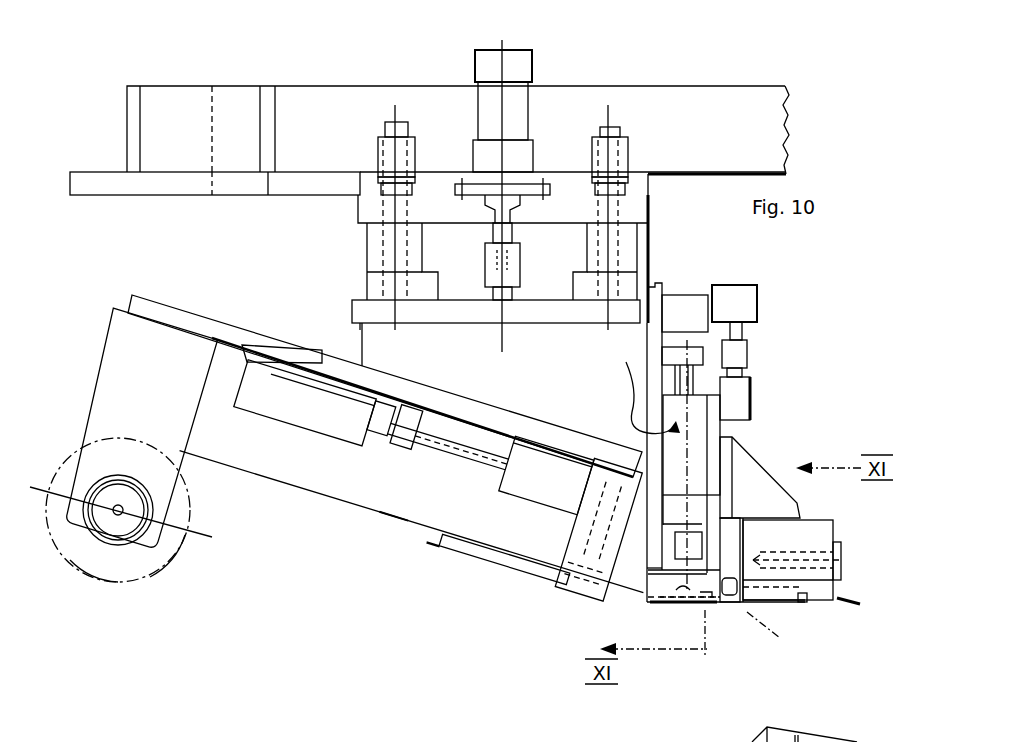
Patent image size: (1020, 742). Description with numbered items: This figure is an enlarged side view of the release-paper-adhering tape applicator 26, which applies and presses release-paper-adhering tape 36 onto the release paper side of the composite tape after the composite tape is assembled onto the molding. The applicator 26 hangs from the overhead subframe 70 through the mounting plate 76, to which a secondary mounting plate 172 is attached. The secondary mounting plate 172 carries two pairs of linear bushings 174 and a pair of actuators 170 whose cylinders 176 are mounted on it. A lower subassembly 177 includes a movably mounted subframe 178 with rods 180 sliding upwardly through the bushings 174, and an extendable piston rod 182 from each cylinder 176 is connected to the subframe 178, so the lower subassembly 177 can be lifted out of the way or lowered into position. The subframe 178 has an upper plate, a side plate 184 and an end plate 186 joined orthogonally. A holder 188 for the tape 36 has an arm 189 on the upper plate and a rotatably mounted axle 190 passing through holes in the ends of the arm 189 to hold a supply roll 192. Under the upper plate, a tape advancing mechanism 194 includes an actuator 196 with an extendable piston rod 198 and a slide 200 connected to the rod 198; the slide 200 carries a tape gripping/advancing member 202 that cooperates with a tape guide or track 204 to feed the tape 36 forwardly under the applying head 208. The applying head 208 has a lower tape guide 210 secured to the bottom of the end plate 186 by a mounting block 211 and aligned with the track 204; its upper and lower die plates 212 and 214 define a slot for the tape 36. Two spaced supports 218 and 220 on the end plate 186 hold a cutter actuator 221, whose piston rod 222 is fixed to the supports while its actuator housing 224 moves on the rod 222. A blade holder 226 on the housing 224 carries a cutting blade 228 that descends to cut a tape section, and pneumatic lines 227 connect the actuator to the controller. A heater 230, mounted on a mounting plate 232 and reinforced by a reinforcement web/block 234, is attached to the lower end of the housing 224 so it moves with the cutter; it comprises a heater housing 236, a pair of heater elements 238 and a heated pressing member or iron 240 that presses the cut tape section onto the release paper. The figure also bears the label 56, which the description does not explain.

The release-paper-adhering tape applicator 26 is at (748, 78).
The release-paper-adhering tape 36 is at (345, 510).
The work piece (58,60) 56 is at (780, 638).
The overhead subframe 70 is at (337, 86).
The mounting plate 76 is at (107, 172).
The actuators 170 is at (536, 54).
The secondary mounting plate 172 is at (650, 206).
The linear bushings 174 is at (632, 160).
The cylinders 176 is at (528, 125).
The lower subassembly 177 is at (339, 300).
The movably mounted subframe 178 is at (440, 365).
The rods 180 is at (400, 124).
The extendable piston rod 182 is at (493, 229).
The side plate 184 is at (592, 414).
The end plate 186 is at (656, 290).
The holder 188 is at (101, 329).
The arm 189 is at (186, 293).
The axle 190 is at (118, 516).
The supply roll 192 is at (145, 581).
The tape advancing mechanism 194 is at (326, 440).
The actuator 196 is at (290, 423).
The extendable piston rod 198 is at (446, 451).
The slide 200 is at (505, 498).
The tape gripping/advancing member 202 is at (572, 541).
The tape guide or track 204 is at (512, 566).
The applying head 208 is at (848, 364).
The lower tape guide 210 is at (661, 606).
The mounting block 211 is at (656, 570).
The upper die plate 212 is at (700, 603).
The lower die plate 214 is at (685, 597).
The support 218 is at (703, 353).
The support 220 is at (700, 510).
The cutter actuator 221 is at (774, 401).
The piston rod 222 is at (692, 382).
The actuator housing 224 is at (702, 417).
The blade holder 226 is at (712, 518).
The pneumatic lines 227 is at (641, 384).
The cutting blade 228 is at (733, 605).
The heater 230 is at (862, 605).
The mounting plate 232 is at (732, 542).
The reinforcement web/block 234 is at (767, 475).
The heater housing 236 is at (845, 558).
The heater elements 238 is at (842, 570).
The heated pressing member or iron 240 is at (793, 605).